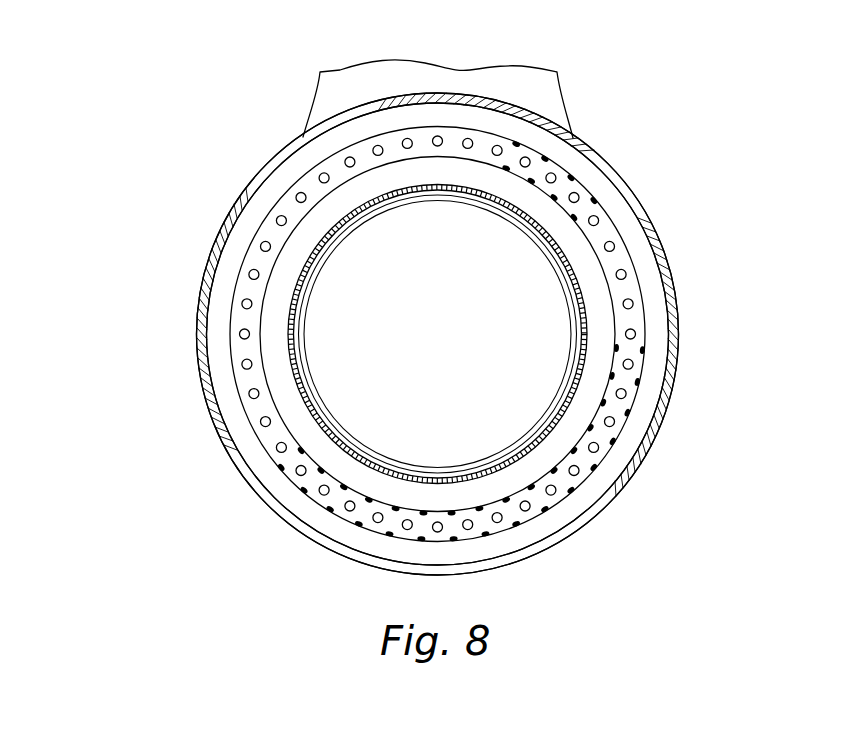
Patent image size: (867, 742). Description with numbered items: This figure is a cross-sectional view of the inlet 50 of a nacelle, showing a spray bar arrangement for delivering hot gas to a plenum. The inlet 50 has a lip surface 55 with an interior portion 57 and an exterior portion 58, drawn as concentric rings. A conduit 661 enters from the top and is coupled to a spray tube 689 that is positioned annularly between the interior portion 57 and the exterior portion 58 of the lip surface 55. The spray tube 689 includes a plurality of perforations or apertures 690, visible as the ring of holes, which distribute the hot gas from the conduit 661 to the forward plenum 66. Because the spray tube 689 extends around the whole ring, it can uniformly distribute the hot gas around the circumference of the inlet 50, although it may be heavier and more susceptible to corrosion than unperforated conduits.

The inlet 50 is at (141, 318).
The lip surface 55 is at (324, 444).
The interior portion 57 is at (297, 330).
The exterior portion 58 is at (224, 240).
The forward plenum 66 is at (607, 201).
The conduit 661 is at (454, 137).
The spray tube 689 is at (307, 182).
The perforations or apertures 690 is at (645, 323).